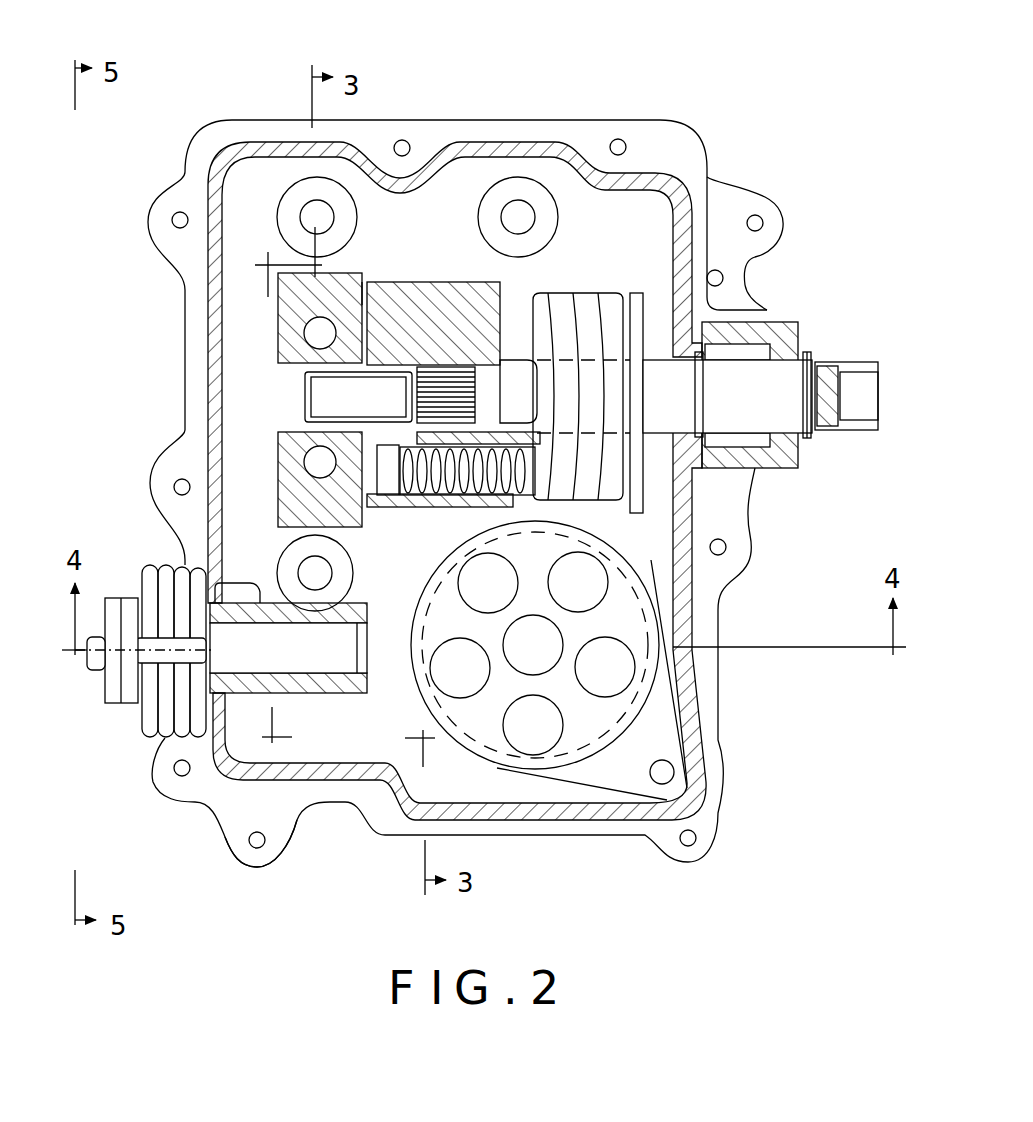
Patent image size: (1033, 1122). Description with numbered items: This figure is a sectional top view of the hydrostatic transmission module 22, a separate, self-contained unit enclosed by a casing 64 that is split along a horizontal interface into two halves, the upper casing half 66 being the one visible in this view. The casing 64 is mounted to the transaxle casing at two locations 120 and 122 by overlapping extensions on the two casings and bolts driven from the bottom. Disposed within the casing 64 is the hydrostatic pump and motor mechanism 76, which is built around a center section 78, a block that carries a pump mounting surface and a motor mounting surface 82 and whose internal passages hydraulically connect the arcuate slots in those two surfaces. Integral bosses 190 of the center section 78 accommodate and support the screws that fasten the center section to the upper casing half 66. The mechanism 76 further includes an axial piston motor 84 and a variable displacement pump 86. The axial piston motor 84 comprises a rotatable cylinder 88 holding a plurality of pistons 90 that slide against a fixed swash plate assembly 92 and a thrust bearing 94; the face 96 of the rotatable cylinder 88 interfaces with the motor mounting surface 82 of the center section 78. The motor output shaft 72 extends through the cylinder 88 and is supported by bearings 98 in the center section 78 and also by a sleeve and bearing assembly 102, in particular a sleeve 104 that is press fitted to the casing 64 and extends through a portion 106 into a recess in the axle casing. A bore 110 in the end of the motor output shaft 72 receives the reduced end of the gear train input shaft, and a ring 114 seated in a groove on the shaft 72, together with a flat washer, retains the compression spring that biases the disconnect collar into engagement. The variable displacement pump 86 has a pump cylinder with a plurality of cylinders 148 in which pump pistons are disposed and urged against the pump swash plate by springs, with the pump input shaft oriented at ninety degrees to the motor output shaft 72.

The hydrostatic transmission module 22 is at (215, 95).
The casing 64 is at (650, 115).
The upper casing half 66 is at (205, 362).
The motor output shaft 72 is at (322, 402).
The hydrostatic pump and motor mechanism 76 is at (396, 243).
The center section 78 is at (300, 533).
The motor mounting surface 82 is at (383, 295).
The axial piston motor 84 is at (457, 276).
The variable displacement pump 86 is at (548, 790).
The rotatable cylinder 88 is at (396, 243).
The pistons 90 is at (545, 498).
The fixed swash plate assembly 92 is at (633, 295).
The thrust bearing 94 is at (555, 295).
The face of rotatable cylinder 96 is at (280, 493).
The bearings 98 is at (280, 338).
The sleeve and bearing assembly 102 is at (787, 316).
The sleeve 104 is at (727, 330).
The portion 106 is at (782, 467).
The bore 110 is at (862, 397).
The ring 114 is at (805, 438).
The mounting location 120 is at (257, 858).
The mounting location 122 is at (740, 203).
The cylinders 148 is at (627, 674).
The integral bosses 190 is at (287, 218).